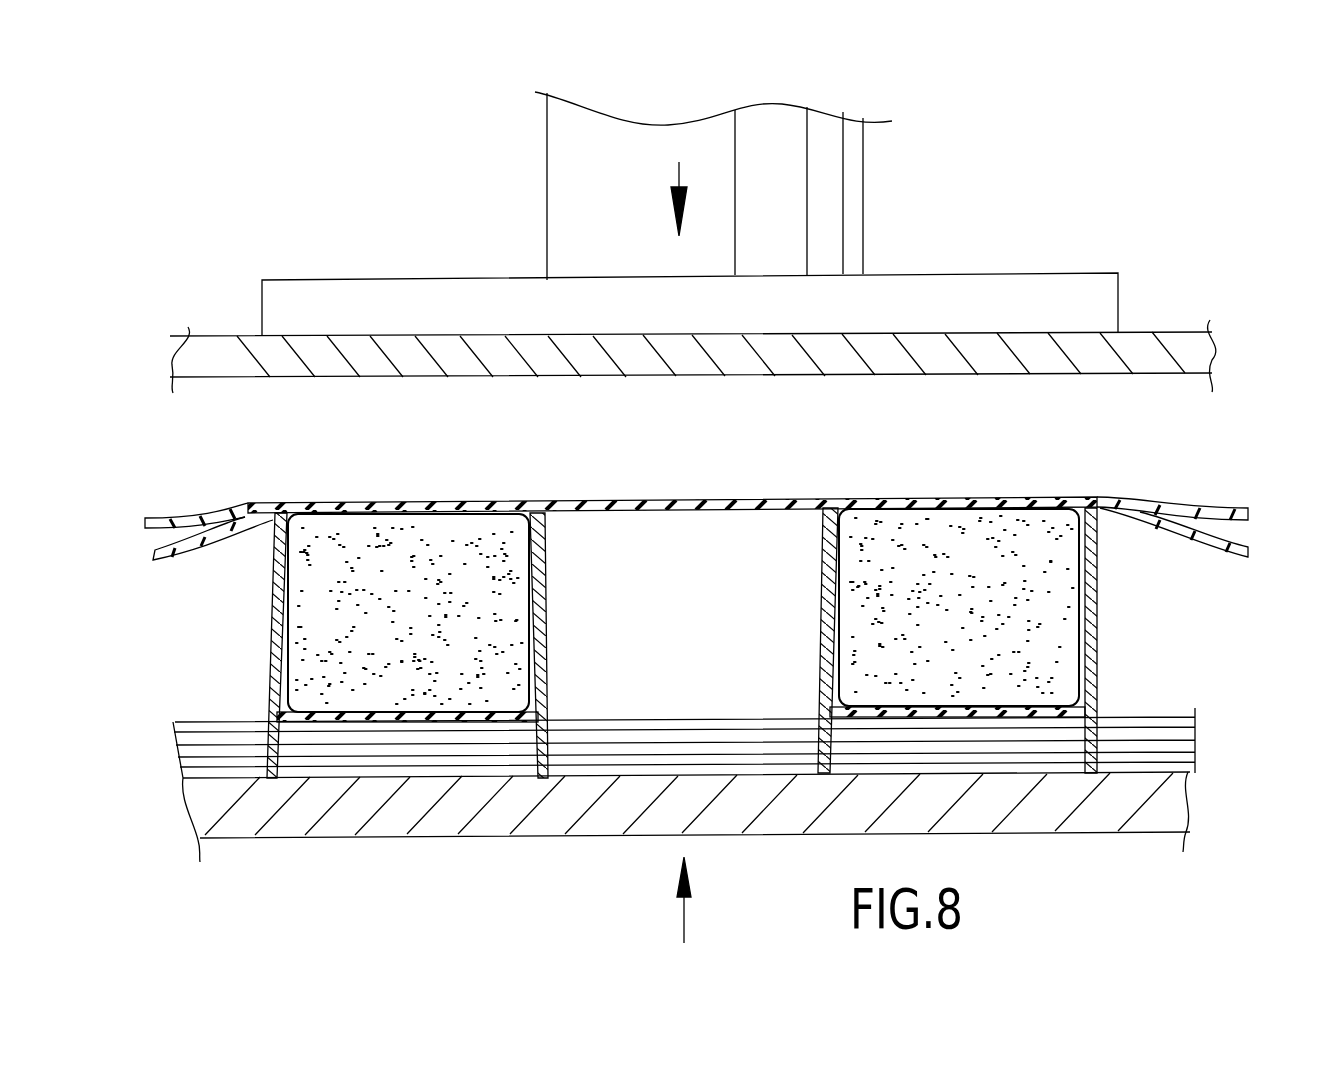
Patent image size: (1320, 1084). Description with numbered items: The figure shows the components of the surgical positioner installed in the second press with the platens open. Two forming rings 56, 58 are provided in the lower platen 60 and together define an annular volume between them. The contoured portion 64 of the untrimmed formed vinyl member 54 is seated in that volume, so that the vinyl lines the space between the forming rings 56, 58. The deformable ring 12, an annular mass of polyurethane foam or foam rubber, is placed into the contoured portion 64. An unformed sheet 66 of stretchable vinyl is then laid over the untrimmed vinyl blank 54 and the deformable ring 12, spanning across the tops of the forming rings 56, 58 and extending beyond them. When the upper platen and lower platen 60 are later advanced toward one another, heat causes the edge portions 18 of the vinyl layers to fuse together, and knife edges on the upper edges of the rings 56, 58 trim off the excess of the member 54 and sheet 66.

The deformable ring 12 is at (980, 617).
The outer juncture 18 is at (1153, 343).
The untrimmed contour member 54 is at (1228, 556).
The forming ring 56 is at (1098, 604).
The forming ring 58 is at (823, 594).
The lower platen 60 is at (1128, 814).
The contoured portion 64 is at (1086, 650).
The unformed sheet 66 is at (1230, 508).